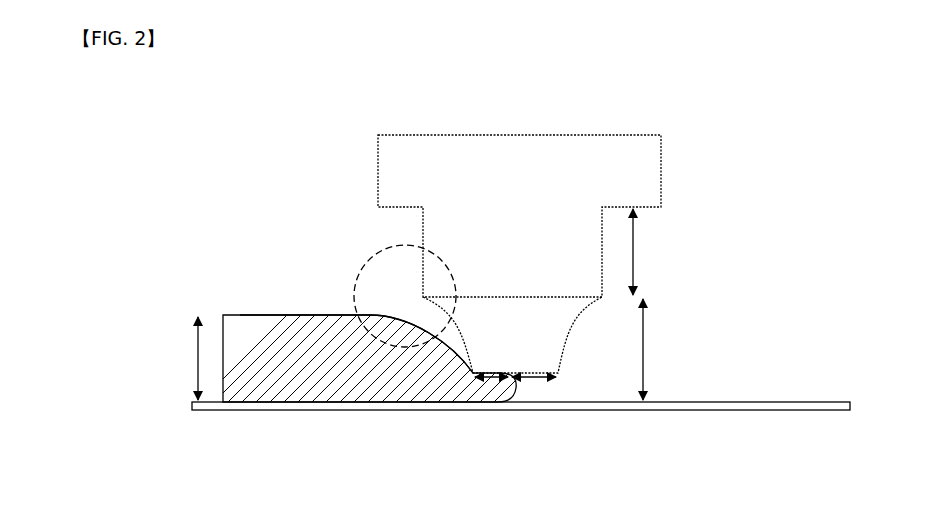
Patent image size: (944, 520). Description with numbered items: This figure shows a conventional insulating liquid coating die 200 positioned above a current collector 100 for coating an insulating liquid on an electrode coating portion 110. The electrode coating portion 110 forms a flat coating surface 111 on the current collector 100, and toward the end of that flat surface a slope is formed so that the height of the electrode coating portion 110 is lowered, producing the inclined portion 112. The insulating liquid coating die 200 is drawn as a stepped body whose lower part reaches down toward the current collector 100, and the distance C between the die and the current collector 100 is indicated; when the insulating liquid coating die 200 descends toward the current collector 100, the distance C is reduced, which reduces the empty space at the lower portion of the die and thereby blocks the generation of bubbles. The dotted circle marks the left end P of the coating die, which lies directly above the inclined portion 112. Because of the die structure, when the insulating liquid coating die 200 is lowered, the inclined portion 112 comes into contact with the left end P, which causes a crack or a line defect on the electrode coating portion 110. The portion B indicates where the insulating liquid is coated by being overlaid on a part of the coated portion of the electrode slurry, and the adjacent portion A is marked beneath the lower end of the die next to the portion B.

The current collector 100 is at (305, 411).
The electrode coating portion 110 is at (256, 321).
The flat coating surface 111 is at (310, 314).
The inclined portion 112 is at (395, 338).
The insulating liquid coating die 200 is at (399, 177).
The left end of the coating die P is at (405, 296).
The portion A is at (534, 390).
The portion B is at (491, 390).
The distance C is at (650, 360).